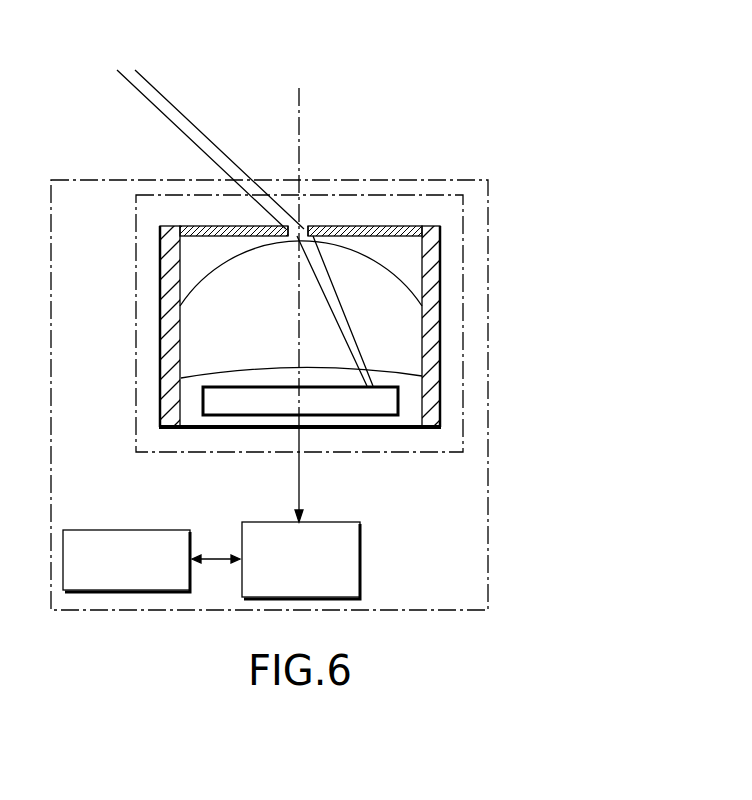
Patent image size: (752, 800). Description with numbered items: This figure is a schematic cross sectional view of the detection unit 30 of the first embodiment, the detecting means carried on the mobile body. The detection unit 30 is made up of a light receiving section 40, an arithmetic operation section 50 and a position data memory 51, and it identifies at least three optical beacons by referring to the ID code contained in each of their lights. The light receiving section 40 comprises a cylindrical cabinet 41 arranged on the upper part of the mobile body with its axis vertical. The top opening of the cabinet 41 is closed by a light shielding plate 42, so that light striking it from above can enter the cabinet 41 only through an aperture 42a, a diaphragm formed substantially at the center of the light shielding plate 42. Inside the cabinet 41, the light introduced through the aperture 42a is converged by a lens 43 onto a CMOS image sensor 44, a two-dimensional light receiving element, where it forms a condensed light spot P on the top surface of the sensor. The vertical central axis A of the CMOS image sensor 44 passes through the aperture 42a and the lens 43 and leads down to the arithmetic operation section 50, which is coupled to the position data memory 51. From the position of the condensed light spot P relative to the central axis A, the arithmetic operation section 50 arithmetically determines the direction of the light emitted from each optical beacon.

The detection unit 30 is at (423, 180).
The light receiving section 40 is at (456, 180).
The cylindrical cabinet 41 is at (160, 258).
The light shielding plate 42 is at (382, 226).
The aperture 42a is at (288, 226).
The lens 43 is at (395, 318).
The CMOS image sensor 44 is at (371, 415).
The arithmetic operation section 50 is at (362, 558).
The position data memory 51 is at (121, 530).
The central axis A is at (301, 99).
The condensed light spot P is at (368, 386).